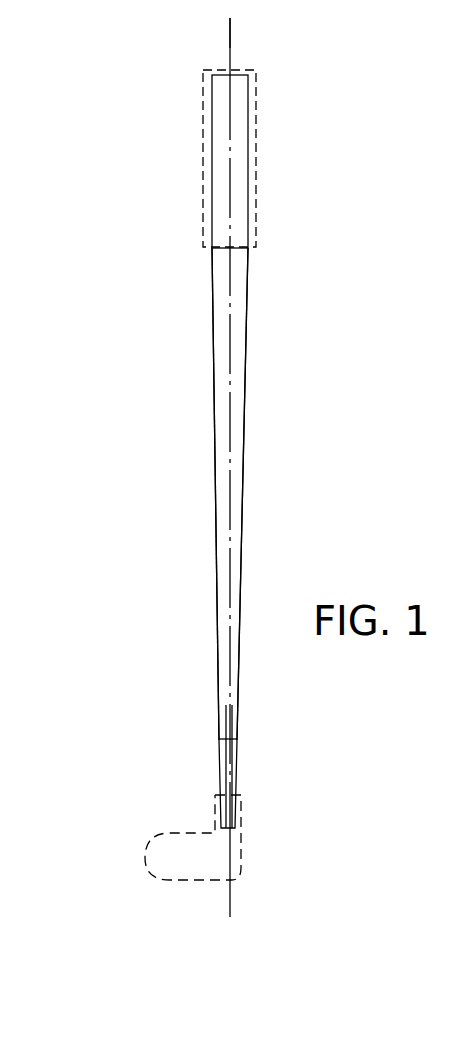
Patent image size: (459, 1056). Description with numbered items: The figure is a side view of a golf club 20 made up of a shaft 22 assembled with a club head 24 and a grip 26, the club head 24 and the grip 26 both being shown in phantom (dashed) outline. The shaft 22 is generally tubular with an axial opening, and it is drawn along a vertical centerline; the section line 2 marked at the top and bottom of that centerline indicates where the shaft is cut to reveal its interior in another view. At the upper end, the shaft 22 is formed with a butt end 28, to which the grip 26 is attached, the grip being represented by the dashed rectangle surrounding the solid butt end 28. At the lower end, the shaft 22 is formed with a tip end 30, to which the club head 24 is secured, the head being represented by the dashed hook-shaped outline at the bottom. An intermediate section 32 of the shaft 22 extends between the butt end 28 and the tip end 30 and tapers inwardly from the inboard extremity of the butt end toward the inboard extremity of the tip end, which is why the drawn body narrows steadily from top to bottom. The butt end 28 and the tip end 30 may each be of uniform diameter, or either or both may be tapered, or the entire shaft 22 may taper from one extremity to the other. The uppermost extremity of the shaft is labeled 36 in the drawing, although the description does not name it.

The section line 2 is at (233, 35).
The golf club 20 is at (135, 363).
The shaft 22 is at (216, 469).
The club head 24 is at (143, 858).
The grip 26 is at (206, 154).
The butt end 28 is at (240, 160).
The tip end 30 is at (233, 767).
The intermediate section 32 is at (237, 358).
The tip end 36 is at (234, 48).